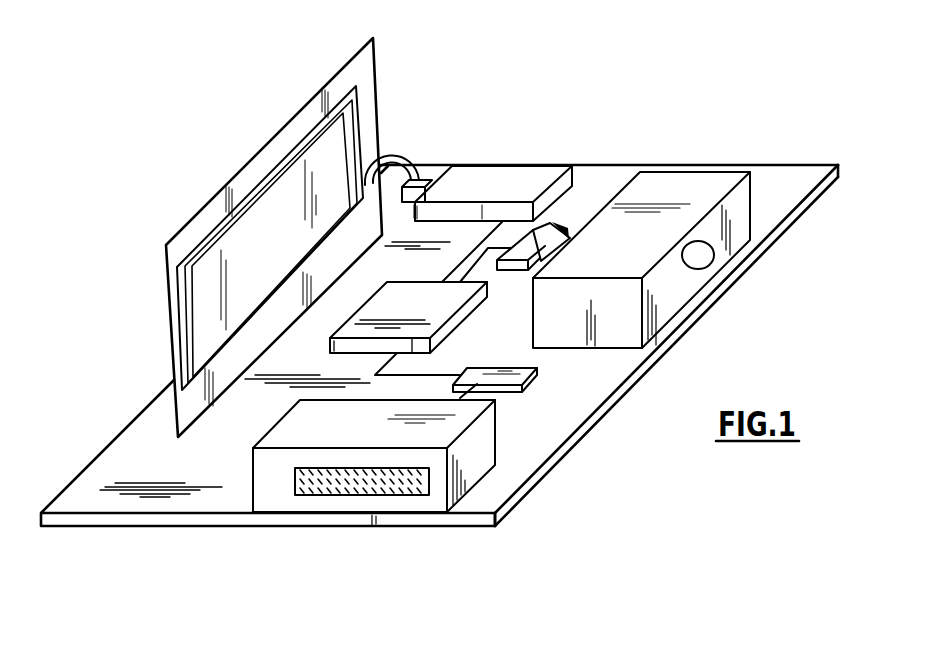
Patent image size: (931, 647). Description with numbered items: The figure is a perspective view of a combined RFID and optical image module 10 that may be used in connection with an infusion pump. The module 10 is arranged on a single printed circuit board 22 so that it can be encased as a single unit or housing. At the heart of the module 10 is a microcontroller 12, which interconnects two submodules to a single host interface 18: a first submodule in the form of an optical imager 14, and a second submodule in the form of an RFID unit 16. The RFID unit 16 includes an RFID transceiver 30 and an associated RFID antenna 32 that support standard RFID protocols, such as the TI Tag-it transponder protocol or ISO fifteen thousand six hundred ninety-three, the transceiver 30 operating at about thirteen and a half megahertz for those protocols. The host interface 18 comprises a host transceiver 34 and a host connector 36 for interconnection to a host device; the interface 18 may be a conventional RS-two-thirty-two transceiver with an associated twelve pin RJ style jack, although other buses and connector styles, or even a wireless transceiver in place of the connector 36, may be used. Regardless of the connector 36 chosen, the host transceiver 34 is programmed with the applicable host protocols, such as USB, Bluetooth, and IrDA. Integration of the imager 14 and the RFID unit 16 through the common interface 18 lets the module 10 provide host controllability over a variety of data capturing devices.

The combined RFID and optical image module 10 is at (589, 57).
The microcontroller 12 is at (450, 312).
The optical imager 14 is at (645, 252).
The RFID unit 16 is at (458, 139).
The host interface 18 is at (551, 446).
The printed circuit board 22 is at (163, 476).
The RFID transceiver 30 is at (506, 197).
The RFID antenna 32 is at (176, 233).
The host transceiver 34 is at (535, 385).
The host connector 36 is at (381, 439).